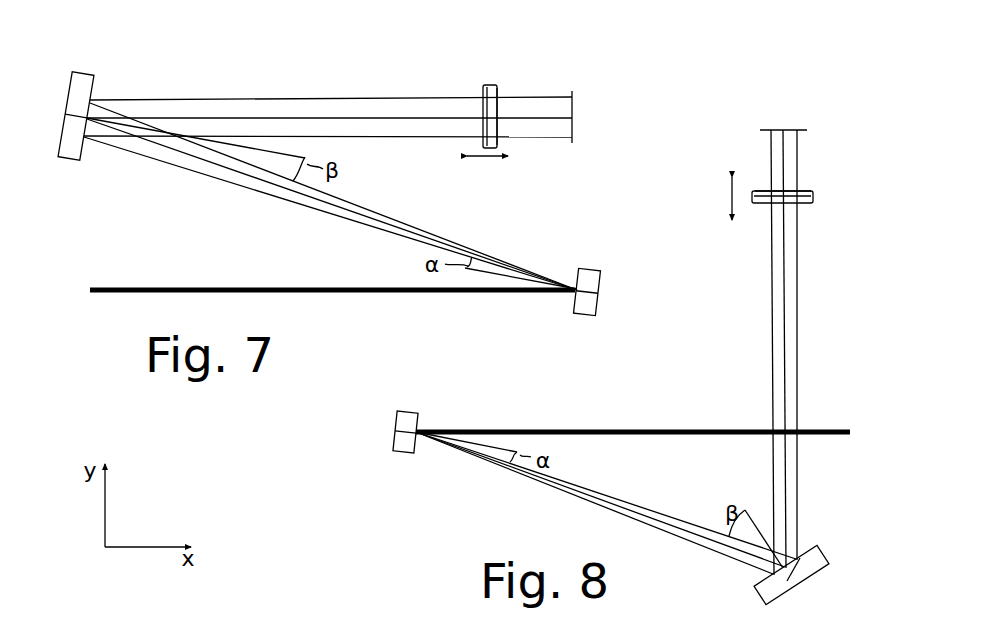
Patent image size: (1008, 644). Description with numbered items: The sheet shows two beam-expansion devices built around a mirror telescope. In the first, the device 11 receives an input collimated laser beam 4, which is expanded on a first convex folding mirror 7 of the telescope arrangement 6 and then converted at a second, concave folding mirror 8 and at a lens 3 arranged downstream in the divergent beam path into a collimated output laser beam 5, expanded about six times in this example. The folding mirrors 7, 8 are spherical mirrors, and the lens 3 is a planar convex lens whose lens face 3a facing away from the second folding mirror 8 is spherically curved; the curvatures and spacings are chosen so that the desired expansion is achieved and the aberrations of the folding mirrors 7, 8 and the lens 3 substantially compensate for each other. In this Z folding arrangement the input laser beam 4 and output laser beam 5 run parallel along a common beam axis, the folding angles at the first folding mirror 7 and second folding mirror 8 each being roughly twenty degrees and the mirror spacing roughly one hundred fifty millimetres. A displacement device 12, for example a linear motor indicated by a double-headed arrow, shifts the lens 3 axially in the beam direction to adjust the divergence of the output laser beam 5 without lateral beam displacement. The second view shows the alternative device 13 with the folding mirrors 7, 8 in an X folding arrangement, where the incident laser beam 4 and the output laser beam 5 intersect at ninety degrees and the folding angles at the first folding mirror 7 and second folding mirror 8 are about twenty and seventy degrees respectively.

In FIG. 7, the lens 3 is at (483, 110).
In FIG. 8, the lens 3 is at (805, 200).
In FIG. 7, the lens face 3a is at (499, 100).
In FIG. 8, the lens face 3a is at (801, 191).
In FIG. 7, the input collimated laser beam 4 is at (118, 288).
In FIG. 8, the input collimated laser beam 4 is at (826, 428).
In FIG. 7, the collimated output laser beam 5 is at (554, 96).
In FIG. 8, the collimated output laser beam 5 is at (800, 152).
In FIG. 7, the telescope arrangement 6 is at (493, 230).
In FIG. 8, the telescope arrangement 6 is at (711, 421).
In FIG. 7, the first convex folding mirror 7 is at (590, 277).
In FIG. 8, the first convex folding mirror 7 is at (403, 440).
In FIG. 7, the second concave folding mirror 8 is at (71, 154).
In FIG. 8, the second concave folding mirror 8 is at (816, 556).
In FIG. 7, the device for beam expansion 11 is at (600, 135).
In FIG. 7, the displacement device 12 is at (488, 162).
In FIG. 8, the displacement device 12 is at (726, 199).
In FIG. 8, the device for beam expansion 13 is at (812, 140).